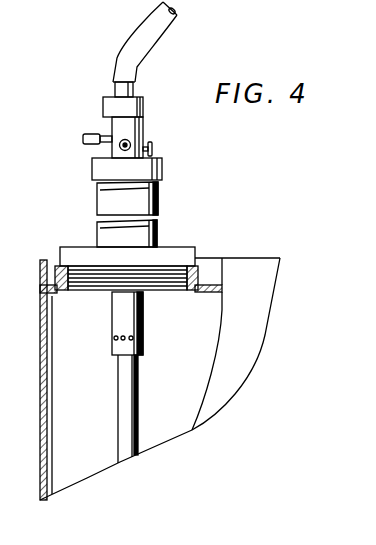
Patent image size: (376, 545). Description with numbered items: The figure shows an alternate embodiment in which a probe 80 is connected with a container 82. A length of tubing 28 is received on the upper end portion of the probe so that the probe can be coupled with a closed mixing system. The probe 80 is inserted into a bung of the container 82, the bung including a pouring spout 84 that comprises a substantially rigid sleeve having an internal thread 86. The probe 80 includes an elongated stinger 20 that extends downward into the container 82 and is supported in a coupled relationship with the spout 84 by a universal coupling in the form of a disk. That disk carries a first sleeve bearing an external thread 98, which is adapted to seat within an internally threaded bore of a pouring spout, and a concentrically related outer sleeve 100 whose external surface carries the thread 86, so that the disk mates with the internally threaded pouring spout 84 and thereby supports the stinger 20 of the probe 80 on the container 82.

The stinger 20 is at (144, 323).
The length of tubing 28 is at (147, 37).
The probe 80 is at (164, 191).
The container 82 is at (240, 267).
The pouring spout 84 is at (197, 268).
The internal thread 86 is at (65, 283).
The external thread 98 is at (153, 288).
The sleeve 100 is at (90, 277).